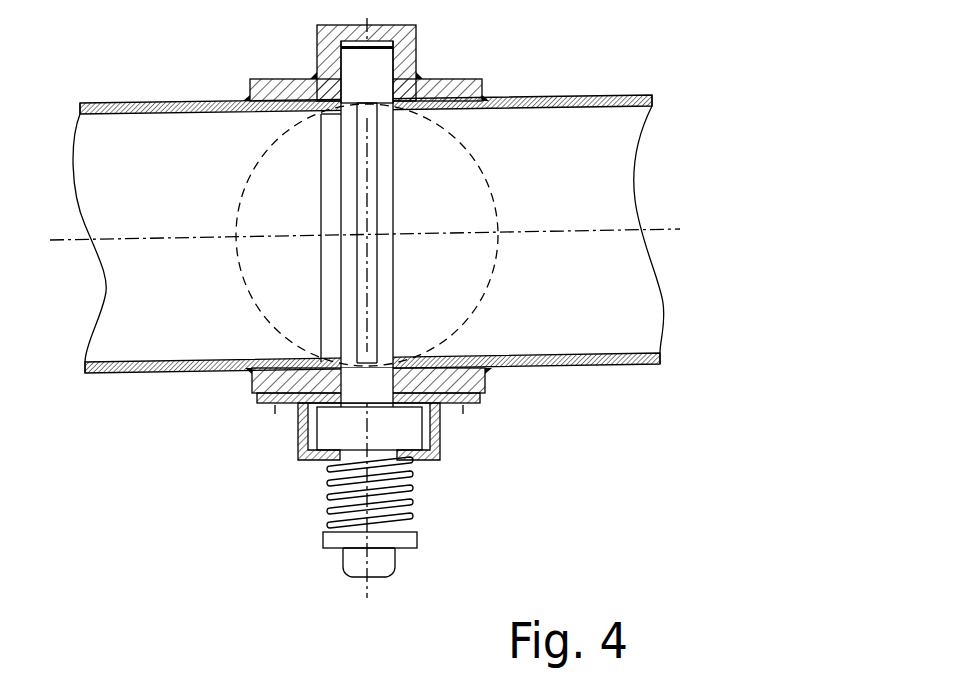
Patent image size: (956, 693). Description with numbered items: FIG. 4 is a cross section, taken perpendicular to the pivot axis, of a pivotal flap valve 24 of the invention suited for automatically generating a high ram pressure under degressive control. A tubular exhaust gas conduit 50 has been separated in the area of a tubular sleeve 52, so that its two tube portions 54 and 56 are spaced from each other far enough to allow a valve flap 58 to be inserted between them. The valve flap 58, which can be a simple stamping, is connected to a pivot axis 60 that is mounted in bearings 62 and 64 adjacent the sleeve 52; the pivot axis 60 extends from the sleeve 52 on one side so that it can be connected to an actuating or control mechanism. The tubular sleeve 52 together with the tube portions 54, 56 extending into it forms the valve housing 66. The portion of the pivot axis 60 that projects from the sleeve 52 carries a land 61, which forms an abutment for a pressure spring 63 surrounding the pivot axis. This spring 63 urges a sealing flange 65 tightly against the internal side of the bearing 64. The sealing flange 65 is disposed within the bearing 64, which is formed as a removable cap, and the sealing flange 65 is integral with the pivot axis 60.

The valve 24 is at (212, 512).
The tubular exhaust gas conduit 50 is at (585, 87).
The tubular sleeve 52 is at (452, 77).
The tube portion 54 is at (115, 313).
The tube portion 56 is at (643, 307).
The valve flap 58 is at (373, 213).
The pivot axis 60 is at (388, 253).
The land 61 is at (408, 540).
The bearing 62 is at (317, 37).
The pressure spring 63 is at (405, 487).
The bearing 64 is at (298, 450).
The sealing flange 65 is at (408, 427).
The valve housing 66 is at (145, 383).